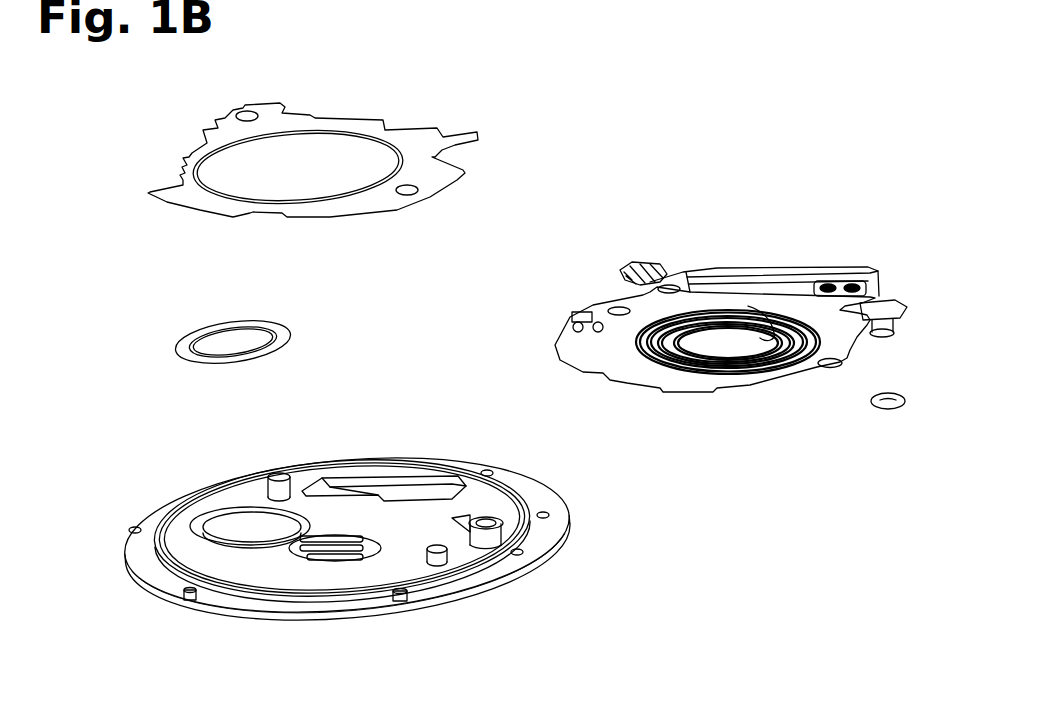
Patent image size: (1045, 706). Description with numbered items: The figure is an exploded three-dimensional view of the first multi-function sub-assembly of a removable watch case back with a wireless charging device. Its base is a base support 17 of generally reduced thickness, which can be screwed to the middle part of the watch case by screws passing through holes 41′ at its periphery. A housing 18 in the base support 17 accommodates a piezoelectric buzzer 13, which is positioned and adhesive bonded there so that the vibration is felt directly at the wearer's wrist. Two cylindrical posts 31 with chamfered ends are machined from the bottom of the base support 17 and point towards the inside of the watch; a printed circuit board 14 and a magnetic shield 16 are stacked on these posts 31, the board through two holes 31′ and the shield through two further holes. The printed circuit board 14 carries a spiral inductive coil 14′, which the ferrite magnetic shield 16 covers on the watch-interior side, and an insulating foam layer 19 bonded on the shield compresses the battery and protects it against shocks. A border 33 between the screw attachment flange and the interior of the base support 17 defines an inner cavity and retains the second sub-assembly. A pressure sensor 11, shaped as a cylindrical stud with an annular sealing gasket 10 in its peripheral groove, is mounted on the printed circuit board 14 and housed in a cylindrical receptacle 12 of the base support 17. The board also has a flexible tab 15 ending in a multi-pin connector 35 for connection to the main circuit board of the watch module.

The annular sealing gasket 10 is at (900, 409).
The pressure sensor 11 is at (895, 337).
The cylindrical receptacle 12 is at (520, 532).
The buzzer 13 is at (178, 342).
The printed circuit board 14 is at (718, 298).
The inductive coil 14′ is at (780, 307).
The flexible tab 15 is at (840, 263).
The magnetic shield 16 is at (200, 155).
The base support 17 is at (153, 510).
The housing 18 is at (240, 528).
The insulating foam layer 19 is at (313, 190).
The posts 31 is at (278, 472).
The holes 31′ is at (680, 282).
The border 33 is at (517, 488).
The connector 35 is at (637, 265).
The holes 41′ is at (405, 602).